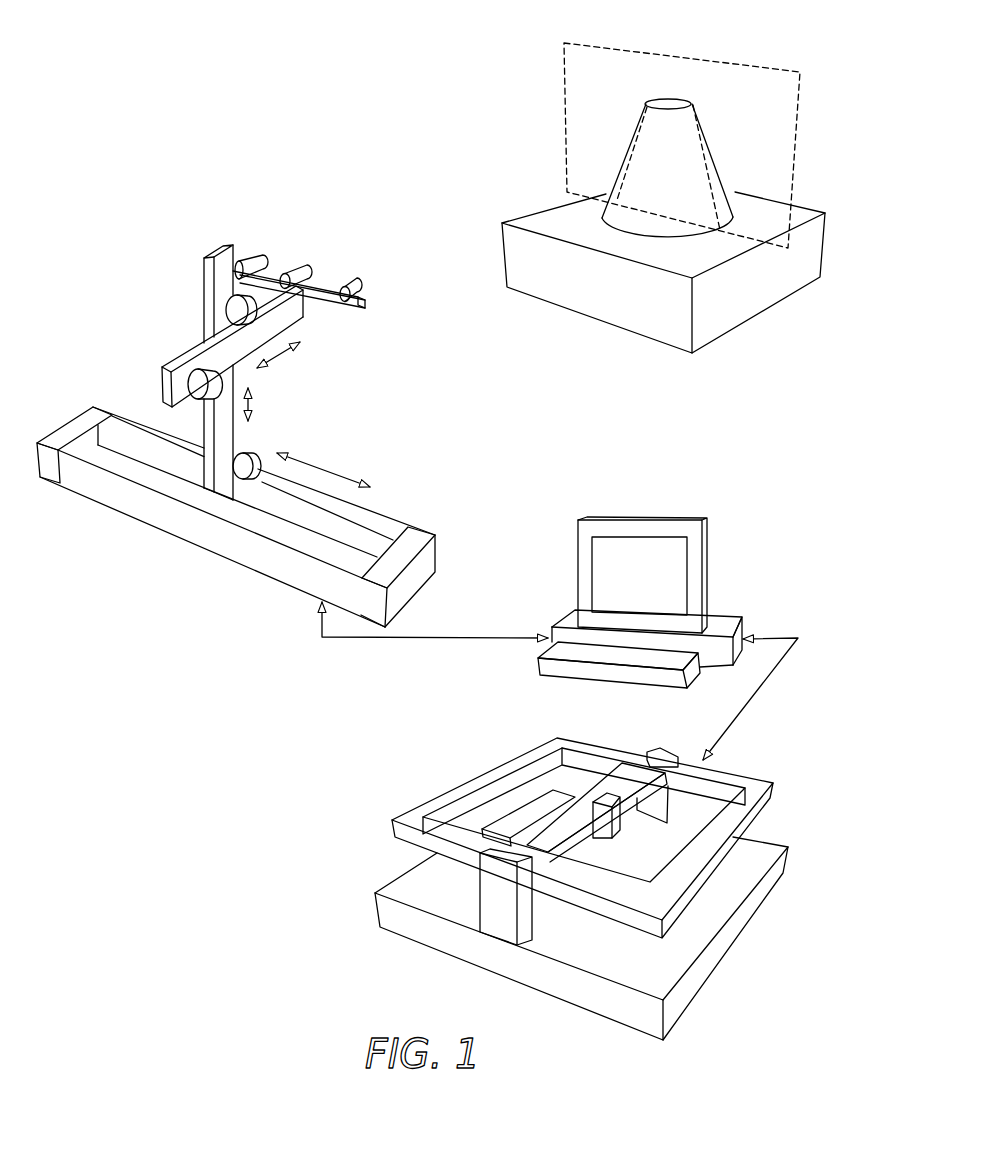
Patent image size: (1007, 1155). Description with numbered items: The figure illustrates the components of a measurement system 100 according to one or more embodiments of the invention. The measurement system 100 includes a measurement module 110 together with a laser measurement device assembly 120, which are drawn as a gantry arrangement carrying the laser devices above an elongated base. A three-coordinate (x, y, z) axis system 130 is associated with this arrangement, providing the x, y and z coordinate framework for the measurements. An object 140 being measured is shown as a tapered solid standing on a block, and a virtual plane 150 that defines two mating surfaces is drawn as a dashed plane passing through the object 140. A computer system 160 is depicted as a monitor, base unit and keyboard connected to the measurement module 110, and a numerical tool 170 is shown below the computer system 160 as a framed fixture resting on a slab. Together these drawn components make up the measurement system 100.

The measurement system 100 is at (455, 681).
The measurement module 110 is at (118, 408).
The laser measurement device assembly 120 is at (373, 289).
The three-coordinate axis system 130 is at (200, 320).
The object 140 is at (699, 110).
The virtual plane 150 is at (563, 110).
The computer system 160 is at (672, 512).
The numerical tool 170 is at (372, 907).